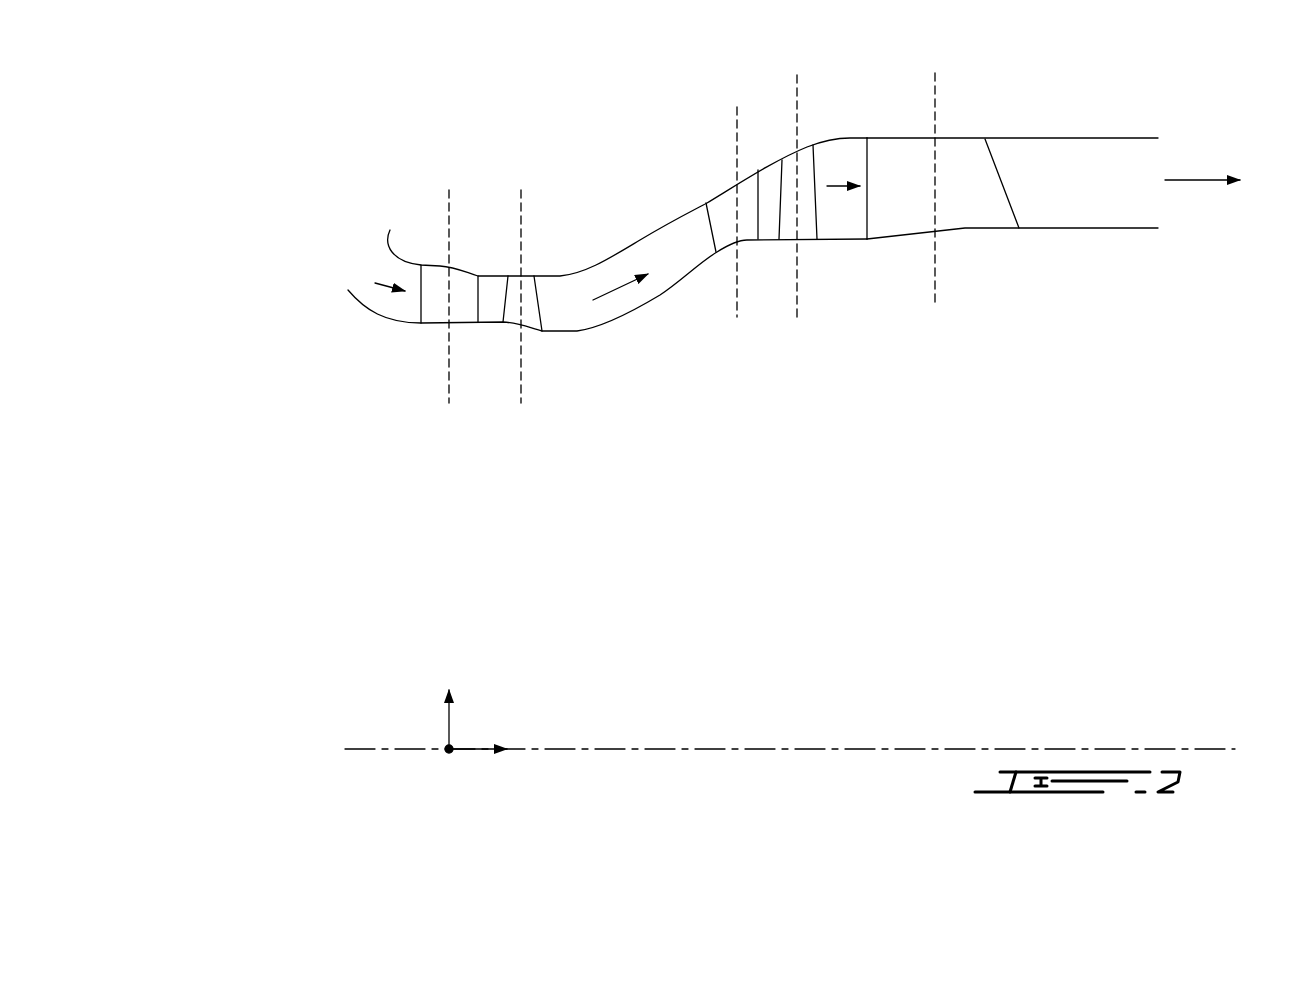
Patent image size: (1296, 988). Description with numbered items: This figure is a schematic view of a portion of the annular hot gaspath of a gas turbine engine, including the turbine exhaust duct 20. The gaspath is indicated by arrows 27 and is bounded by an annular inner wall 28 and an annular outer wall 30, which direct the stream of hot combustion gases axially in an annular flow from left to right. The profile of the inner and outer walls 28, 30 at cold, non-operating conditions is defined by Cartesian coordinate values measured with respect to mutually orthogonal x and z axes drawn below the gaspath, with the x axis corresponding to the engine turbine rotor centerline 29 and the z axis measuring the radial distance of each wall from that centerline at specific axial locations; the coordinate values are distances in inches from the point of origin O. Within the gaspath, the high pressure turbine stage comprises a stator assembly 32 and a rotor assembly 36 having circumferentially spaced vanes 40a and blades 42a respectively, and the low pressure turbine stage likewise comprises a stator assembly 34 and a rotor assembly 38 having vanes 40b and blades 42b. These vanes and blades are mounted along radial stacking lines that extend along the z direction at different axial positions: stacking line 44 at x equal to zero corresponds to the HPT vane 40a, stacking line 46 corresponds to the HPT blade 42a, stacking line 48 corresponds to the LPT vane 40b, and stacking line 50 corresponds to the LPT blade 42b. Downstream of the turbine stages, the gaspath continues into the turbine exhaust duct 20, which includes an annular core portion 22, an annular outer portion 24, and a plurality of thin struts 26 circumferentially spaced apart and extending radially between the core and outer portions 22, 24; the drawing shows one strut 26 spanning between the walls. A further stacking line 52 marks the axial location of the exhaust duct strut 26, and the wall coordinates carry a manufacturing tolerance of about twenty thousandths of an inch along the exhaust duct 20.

The turbine exhaust duct 20 is at (1000, 122).
The annular core portion 22 is at (975, 230).
The annular outer portion 24 is at (961, 139).
The thin strut 26 is at (944, 208).
The arrows 27 is at (380, 283).
The inner wall 28 is at (580, 331).
The engine turbine rotor centerline 29 is at (807, 751).
The outer wall 30 is at (596, 265).
The stator assembly 32 is at (463, 266).
The stator assembly 34 is at (716, 192).
The rotor assembly 36 is at (531, 268).
The rotor assembly 38 is at (807, 146).
The vanes 40a is at (437, 305).
The vanes 40b is at (725, 228).
The blades 42a is at (515, 312).
The blades 42b is at (810, 228).
The stacking line 44 is at (448, 200).
The stacking line 46 is at (521, 200).
The stacking line 48 is at (738, 130).
The stacking line 50 is at (797, 103).
The stacking line 52 is at (935, 103).
The point of origin O is at (445, 754).